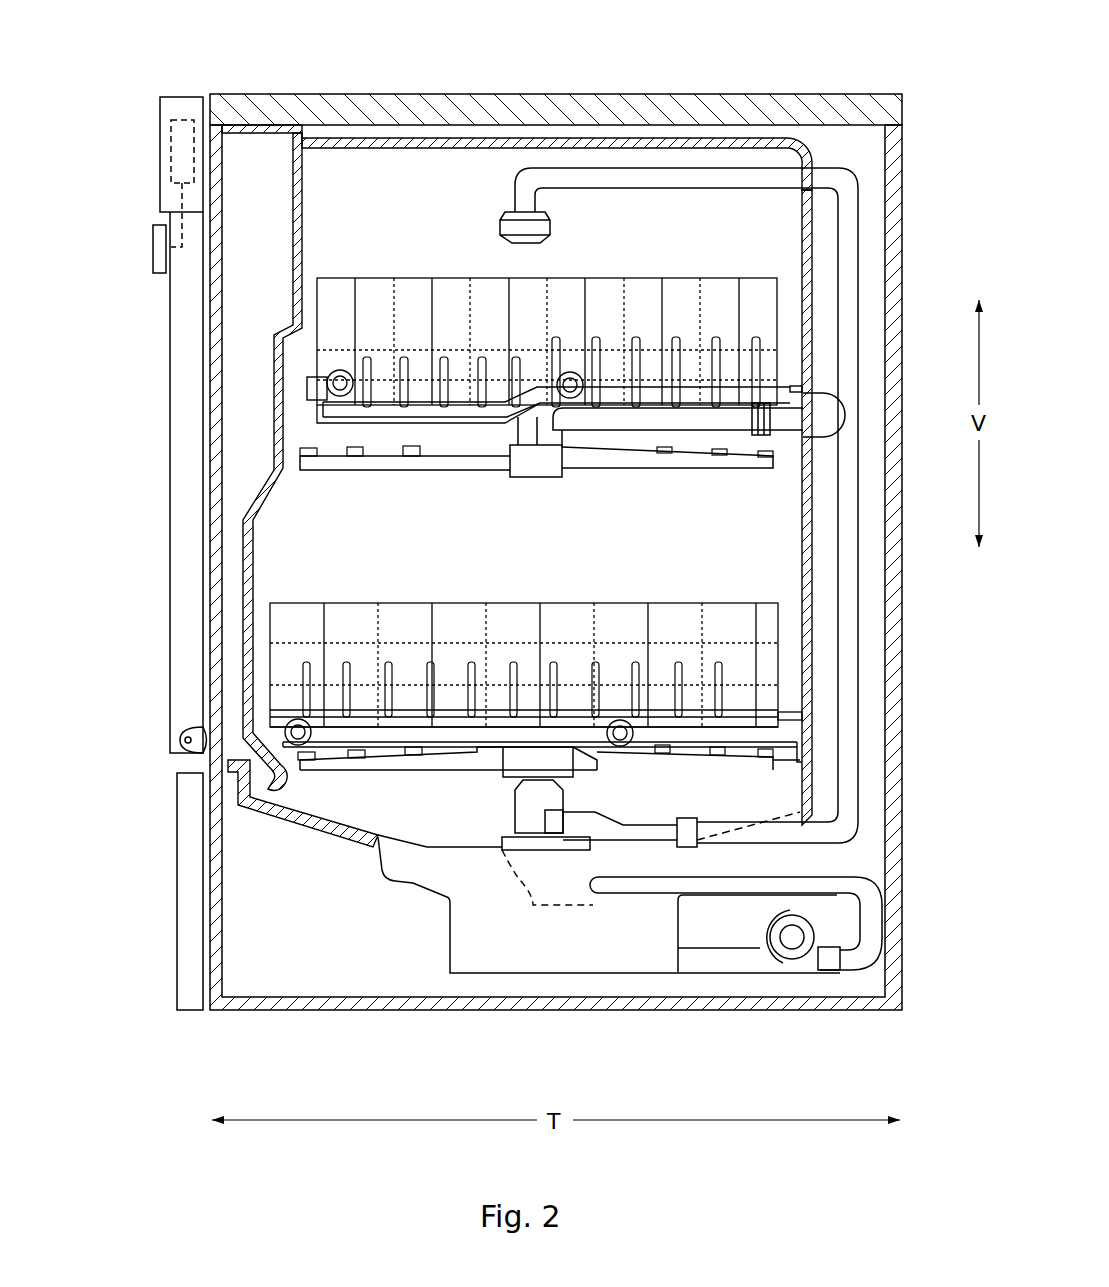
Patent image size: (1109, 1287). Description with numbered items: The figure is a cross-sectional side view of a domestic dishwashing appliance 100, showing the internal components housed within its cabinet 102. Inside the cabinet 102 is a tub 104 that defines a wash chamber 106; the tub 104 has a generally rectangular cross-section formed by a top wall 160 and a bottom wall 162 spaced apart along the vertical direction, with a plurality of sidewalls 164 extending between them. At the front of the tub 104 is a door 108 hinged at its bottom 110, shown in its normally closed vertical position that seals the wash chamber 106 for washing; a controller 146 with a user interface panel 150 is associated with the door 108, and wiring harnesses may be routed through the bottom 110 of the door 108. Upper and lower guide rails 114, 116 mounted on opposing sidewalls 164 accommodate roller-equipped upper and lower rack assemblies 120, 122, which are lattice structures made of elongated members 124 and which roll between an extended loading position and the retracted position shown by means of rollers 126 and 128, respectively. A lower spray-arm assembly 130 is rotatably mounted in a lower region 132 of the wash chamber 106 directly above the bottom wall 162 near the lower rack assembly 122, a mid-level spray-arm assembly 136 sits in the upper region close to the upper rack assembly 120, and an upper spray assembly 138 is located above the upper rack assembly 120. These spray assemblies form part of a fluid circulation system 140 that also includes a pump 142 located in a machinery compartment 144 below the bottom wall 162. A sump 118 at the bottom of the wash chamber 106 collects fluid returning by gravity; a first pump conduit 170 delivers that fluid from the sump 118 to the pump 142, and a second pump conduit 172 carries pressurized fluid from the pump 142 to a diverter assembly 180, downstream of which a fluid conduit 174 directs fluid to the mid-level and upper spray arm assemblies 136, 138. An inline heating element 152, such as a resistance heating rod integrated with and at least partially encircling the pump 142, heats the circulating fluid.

The dishwashing appliance 100 is at (745, 50).
The cabinet 102 is at (893, 155).
The tub 104 is at (397, 554).
The wash chamber 106 is at (514, 500).
The door 108 is at (170, 580).
The bottom of the door 110 is at (180, 748).
The upper guide rail 114 is at (307, 387).
The lower guide rail 116 is at (290, 757).
The sump 118 is at (463, 860).
The upper rack assembly 120 is at (378, 265).
The lower rack assembly 122 is at (615, 603).
The elongated members 124 is at (392, 603).
The rollers 126 is at (312, 400).
The rollers 128 is at (618, 728).
The lower spray-arm assembly 130 is at (430, 760).
The lower region 132 is at (790, 742).
The mid-level spray-arm assembly 136 is at (552, 463).
The upper spray assembly 138 is at (550, 238).
The fluid circulation system 140 is at (860, 543).
The pump 142 is at (810, 958).
The machinery compartment 144 is at (378, 963).
The controller 146 is at (143, 117).
The user interface panel 150 is at (160, 248).
The inline heating element 152 is at (768, 922).
The top wall 160 is at (572, 145).
The bottom wall 162 is at (335, 828).
The sidewalls 164 is at (380, 170).
The first pump conduit 170 is at (700, 960).
The second pump conduit 172 is at (870, 903).
The fluid conduit 174 is at (845, 457).
The diverter assembly 180 is at (543, 907).